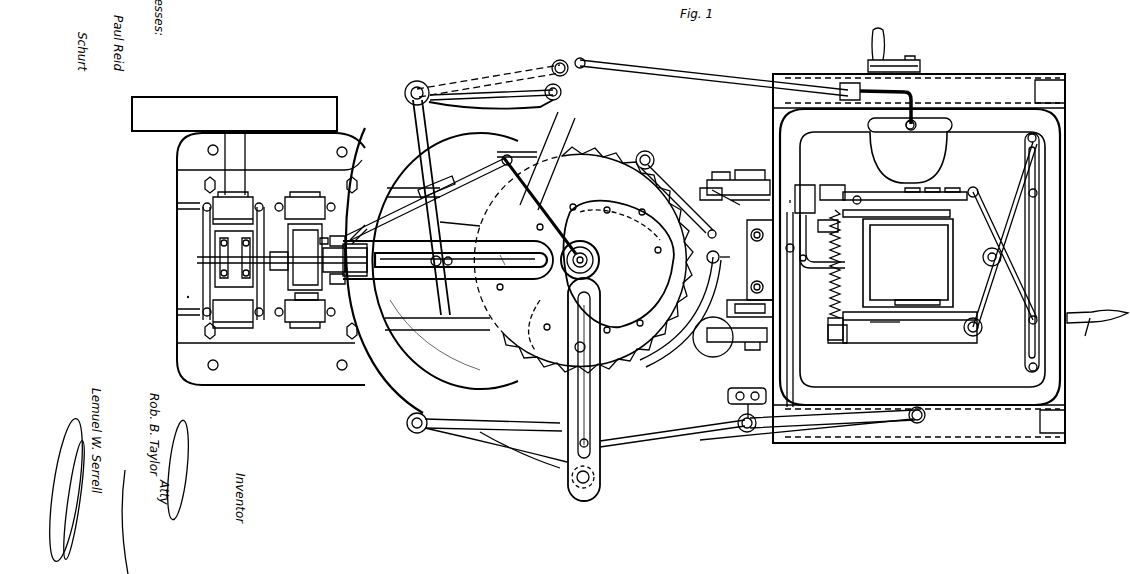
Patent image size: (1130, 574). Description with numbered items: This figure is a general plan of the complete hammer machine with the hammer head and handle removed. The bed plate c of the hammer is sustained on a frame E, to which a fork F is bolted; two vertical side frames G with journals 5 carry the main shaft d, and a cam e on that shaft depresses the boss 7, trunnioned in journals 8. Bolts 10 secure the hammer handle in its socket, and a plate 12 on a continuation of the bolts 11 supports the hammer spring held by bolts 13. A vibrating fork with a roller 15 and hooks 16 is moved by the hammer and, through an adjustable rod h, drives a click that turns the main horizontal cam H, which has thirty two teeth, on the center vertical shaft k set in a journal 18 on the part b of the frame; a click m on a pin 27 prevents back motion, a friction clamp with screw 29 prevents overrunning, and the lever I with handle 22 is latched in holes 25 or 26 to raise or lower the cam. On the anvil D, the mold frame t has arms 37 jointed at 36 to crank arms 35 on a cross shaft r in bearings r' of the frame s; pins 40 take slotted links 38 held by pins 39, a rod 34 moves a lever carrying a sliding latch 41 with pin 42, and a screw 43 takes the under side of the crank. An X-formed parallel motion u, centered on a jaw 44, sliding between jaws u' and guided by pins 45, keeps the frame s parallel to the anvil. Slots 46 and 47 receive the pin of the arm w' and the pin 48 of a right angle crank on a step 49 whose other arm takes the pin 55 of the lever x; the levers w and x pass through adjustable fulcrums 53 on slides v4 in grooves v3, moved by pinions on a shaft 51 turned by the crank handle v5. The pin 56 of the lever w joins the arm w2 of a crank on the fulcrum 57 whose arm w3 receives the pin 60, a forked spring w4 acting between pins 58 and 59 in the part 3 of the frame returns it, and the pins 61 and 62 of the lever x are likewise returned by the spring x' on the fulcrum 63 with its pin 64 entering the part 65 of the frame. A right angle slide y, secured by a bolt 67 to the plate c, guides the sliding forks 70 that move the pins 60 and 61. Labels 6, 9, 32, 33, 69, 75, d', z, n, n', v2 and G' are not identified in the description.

The curved fork 3 is at (449, 256).
The journals 5 is at (905, 266).
The collar 6 is at (282, 261).
The boss 7 is at (323, 260).
The journals 8 is at (306, 294).
The ratchet wheel 9 is at (336, 253).
The bolts and nuts 10 is at (306, 257).
The bolts 11 is at (267, 258).
The plate 12 is at (234, 259).
The bolts 13 is at (234, 258).
The roller 15 is at (360, 230).
The hook 16 is at (320, 235).
The journal 18 is at (585, 259).
The handle 22 is at (1097, 312).
The hole 25 is at (1090, 333).
The hole 26 is at (711, 209).
The pin 27 is at (727, 257).
The screw 29 is at (676, 193).
The block 32 is at (750, 308).
The bar 33 is at (885, 328).
The rod 34 is at (741, 195).
The crank arms 35 is at (910, 270).
The joint 36 is at (917, 265).
The arms 37 is at (721, 227).
The connecting link 38 is at (934, 258).
The pin 39 is at (911, 258).
The pin 40 is at (955, 264).
The sliding latch 41 is at (823, 229).
The pin 42 is at (820, 192).
The screw 43 is at (860, 213).
The jaw 44 is at (740, 410).
The pins 45 is at (1033, 252).
The slot 46 is at (909, 132).
The slot 47 is at (779, 309).
The pin 48 is at (779, 257).
The step 49 is at (806, 421).
The shaft 51 is at (904, 50).
The fulcrums 53 is at (878, 104).
The pin 55 is at (850, 417).
The pin 56 is at (587, 53).
The fulcrum 57 is at (411, 93).
The pin 58 is at (562, 57).
The pin 59 is at (565, 216).
The pin 60 is at (589, 473).
The pin 61 is at (431, 271).
The pin 62 is at (564, 443).
The fulcrum 63 is at (421, 417).
The pin 64 is at (493, 427).
The part of frame 65 is at (500, 447).
The bolt 67 is at (358, 255).
The slotted bar 69 is at (448, 256).
The sliding fork 70 is at (546, 337).
The cam plate 75 is at (598, 274).
The frame E is at (248, 241).
The main shaft d is at (233, 253).
The bearing d' is at (305, 200).
The vertical side frames G is at (305, 307).
The cam e is at (272, 263).
The bed plate c is at (283, 294).
The fork F is at (435, 335).
The supporting lever I is at (449, 224).
The crank arm w3 is at (431, 207).
The crank arm w2 is at (738, 139).
The spring w4 is at (491, 86).
The parallel lever w is at (714, 78).
The adjustable rod h is at (426, 200).
The teeth z is at (537, 257).
The main horizontal cam H is at (581, 252).
The center vertical shaft k is at (589, 266).
The slide y is at (584, 389).
The spring x' is at (520, 450).
The left side lever x is at (724, 334).
The click m is at (680, 312).
The part of top bed frame b is at (751, 260).
The lever n' is at (730, 340).
The lever n is at (738, 180).
The slides v4 is at (919, 258).
The groove v3 is at (1050, 256).
The anvil D is at (920, 257).
The plate v2 is at (921, 257).
The arm w' is at (910, 118).
The crank handle v5 is at (894, 55).
The table G' is at (908, 263).
The bearings r' is at (837, 341).
The cross shaft r is at (822, 241).
The mold frame t is at (820, 269).
The frame s is at (809, 265).
The parallel motion u is at (1002, 237).
The jaws u' is at (980, 328).